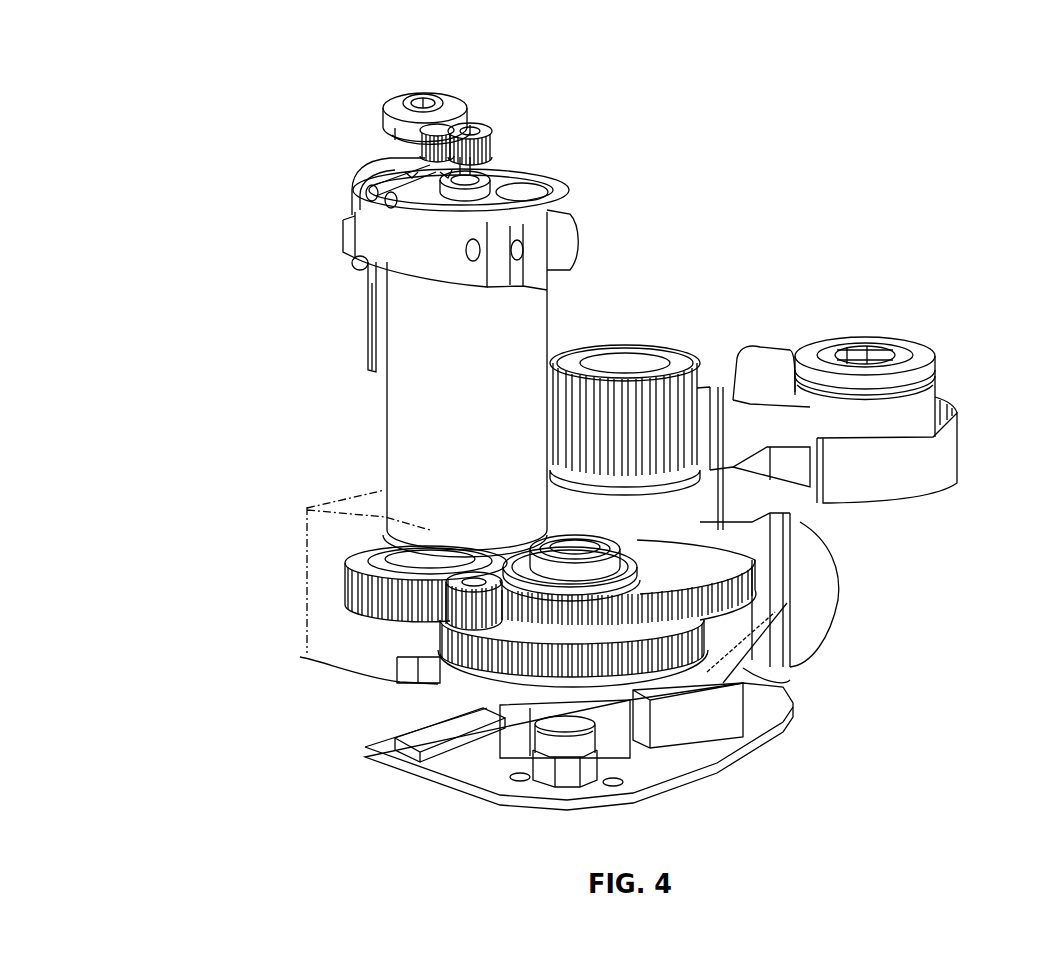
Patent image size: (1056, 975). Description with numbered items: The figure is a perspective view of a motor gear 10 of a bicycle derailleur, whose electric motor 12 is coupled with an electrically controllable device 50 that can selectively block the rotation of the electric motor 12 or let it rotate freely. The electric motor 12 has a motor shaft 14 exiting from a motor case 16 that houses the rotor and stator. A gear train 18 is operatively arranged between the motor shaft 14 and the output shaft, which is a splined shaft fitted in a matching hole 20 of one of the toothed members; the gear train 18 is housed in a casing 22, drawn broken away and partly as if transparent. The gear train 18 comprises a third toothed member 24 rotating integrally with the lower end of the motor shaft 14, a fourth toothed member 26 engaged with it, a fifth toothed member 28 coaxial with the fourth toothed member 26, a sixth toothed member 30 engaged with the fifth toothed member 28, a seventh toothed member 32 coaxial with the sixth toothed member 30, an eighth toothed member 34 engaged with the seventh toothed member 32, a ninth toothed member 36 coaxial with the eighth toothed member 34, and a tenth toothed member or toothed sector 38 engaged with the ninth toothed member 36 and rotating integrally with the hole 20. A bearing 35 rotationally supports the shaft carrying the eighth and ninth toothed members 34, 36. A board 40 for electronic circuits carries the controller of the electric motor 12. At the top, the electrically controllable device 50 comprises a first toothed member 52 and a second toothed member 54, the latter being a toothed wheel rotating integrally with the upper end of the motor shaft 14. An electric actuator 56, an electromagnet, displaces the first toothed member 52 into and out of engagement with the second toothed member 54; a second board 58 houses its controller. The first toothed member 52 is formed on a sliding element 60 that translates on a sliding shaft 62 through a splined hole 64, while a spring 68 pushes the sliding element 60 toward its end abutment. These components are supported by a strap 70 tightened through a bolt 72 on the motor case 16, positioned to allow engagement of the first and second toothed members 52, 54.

The motor gear 10 is at (172, 209).
The electric motor 12 is at (354, 393).
The motor shaft 14 is at (470, 164).
The motor case 16 is at (400, 468).
The gear train 18 is at (722, 297).
The hole 20 is at (880, 356).
The casing 22 is at (320, 533).
The third toothed member 24 is at (410, 614).
The fourth toothed member 26 is at (353, 585).
The fifth toothed member 28 is at (420, 642).
The sixth toothed member 30 is at (447, 652).
The seventh toothed member 32 is at (645, 608).
The eighth toothed member 34 is at (705, 583).
The bearing 35 is at (700, 518).
The ninth toothed member 36 is at (612, 350).
The tenth toothed member 38 is at (772, 352).
The board for electronic circuits 40 is at (775, 698).
The electrically controllable device 50 is at (574, 80).
The first toothed member 52 is at (462, 120).
The second toothed member 54 is at (467, 144).
The electric actuator 56 is at (378, 170).
The second board for electronic circuits 58 is at (367, 298).
The sliding element 60 is at (398, 118).
The sliding shaft 62 is at (430, 95).
The hole 64 is at (437, 103).
The spring 68 is at (412, 148).
The strap 70 is at (560, 190).
The bolt 72 is at (568, 246).